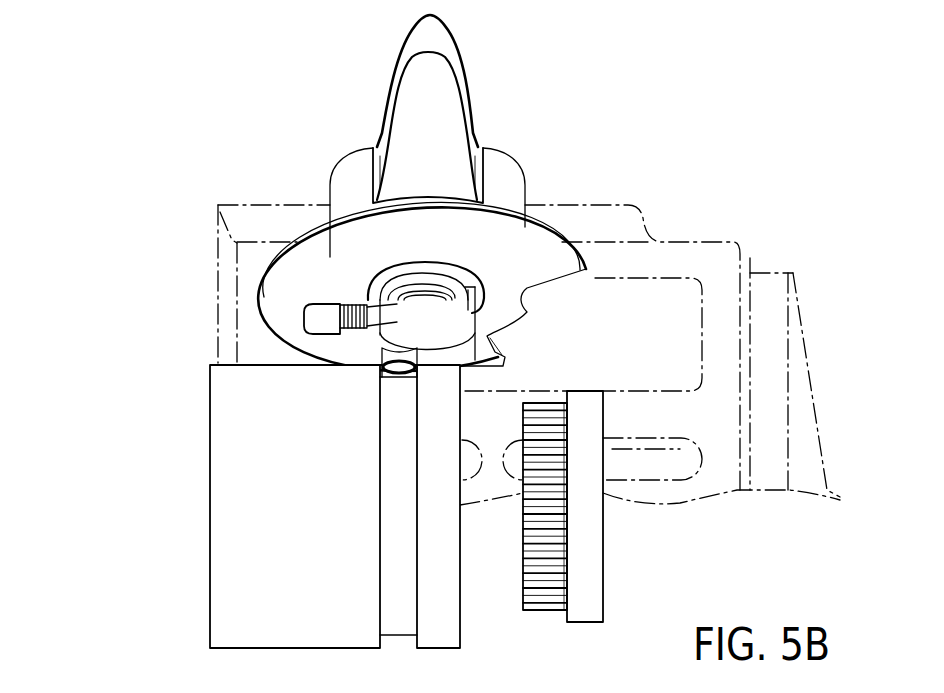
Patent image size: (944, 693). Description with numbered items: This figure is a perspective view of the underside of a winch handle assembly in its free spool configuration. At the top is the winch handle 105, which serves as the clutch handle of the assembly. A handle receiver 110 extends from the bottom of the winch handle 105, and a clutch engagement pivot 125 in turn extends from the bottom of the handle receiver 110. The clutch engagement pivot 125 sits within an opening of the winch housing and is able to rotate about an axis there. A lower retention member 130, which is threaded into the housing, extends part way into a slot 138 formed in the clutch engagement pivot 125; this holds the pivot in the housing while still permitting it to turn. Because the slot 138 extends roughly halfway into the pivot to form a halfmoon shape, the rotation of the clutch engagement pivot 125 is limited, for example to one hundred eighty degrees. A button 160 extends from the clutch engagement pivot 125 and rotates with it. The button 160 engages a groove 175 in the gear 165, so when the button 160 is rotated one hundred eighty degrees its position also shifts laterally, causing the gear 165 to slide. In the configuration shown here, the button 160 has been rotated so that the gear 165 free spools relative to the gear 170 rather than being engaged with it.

The winch handle 105 is at (330, 185).
The handle receiver 110 is at (578, 273).
The clutch engagement pivot 125 is at (457, 325).
The lower retention member 130 is at (307, 322).
The slot 138 is at (440, 298).
The button 160 is at (427, 390).
The gear 165 is at (172, 523).
The gear 170 is at (625, 563).
The groove 175 is at (400, 588).